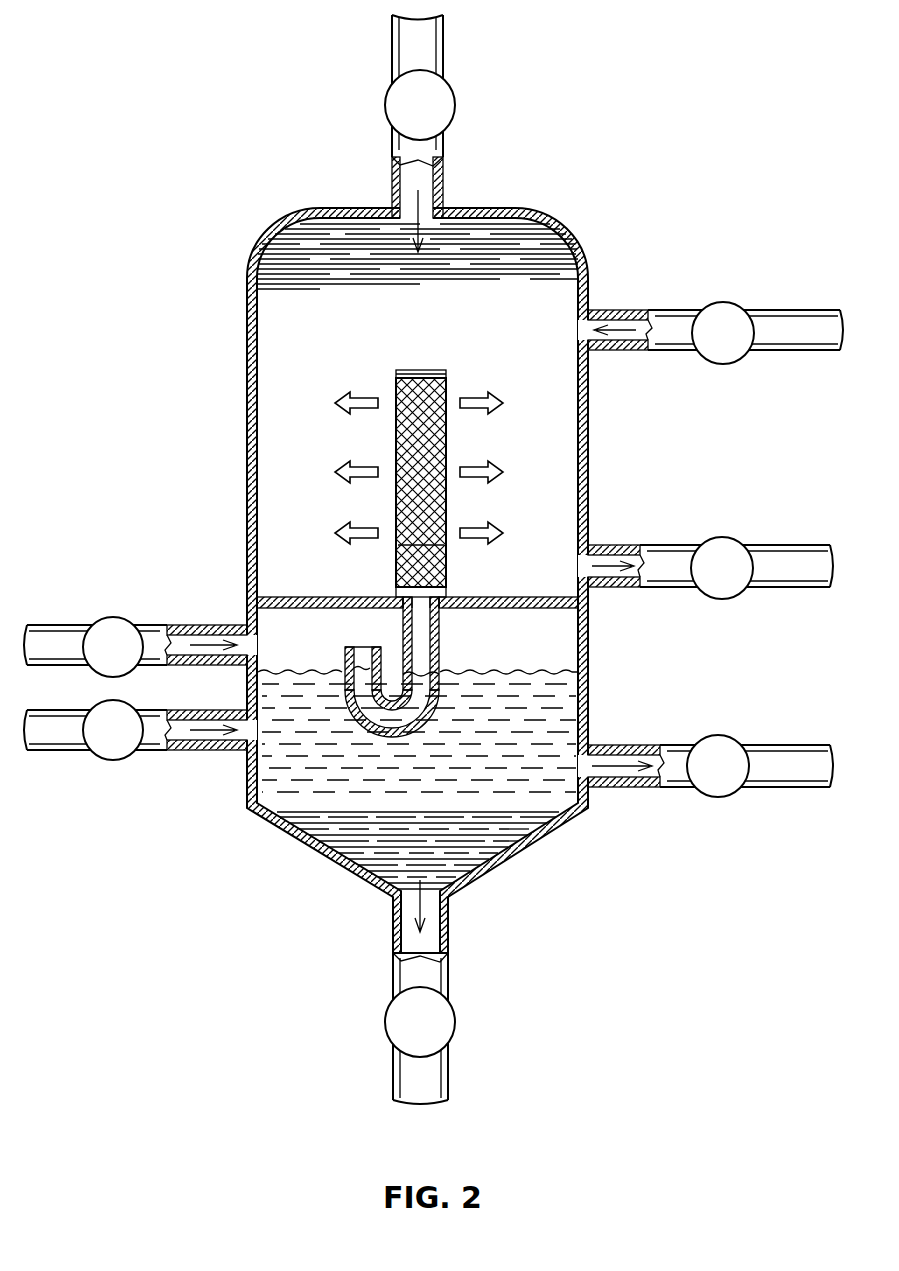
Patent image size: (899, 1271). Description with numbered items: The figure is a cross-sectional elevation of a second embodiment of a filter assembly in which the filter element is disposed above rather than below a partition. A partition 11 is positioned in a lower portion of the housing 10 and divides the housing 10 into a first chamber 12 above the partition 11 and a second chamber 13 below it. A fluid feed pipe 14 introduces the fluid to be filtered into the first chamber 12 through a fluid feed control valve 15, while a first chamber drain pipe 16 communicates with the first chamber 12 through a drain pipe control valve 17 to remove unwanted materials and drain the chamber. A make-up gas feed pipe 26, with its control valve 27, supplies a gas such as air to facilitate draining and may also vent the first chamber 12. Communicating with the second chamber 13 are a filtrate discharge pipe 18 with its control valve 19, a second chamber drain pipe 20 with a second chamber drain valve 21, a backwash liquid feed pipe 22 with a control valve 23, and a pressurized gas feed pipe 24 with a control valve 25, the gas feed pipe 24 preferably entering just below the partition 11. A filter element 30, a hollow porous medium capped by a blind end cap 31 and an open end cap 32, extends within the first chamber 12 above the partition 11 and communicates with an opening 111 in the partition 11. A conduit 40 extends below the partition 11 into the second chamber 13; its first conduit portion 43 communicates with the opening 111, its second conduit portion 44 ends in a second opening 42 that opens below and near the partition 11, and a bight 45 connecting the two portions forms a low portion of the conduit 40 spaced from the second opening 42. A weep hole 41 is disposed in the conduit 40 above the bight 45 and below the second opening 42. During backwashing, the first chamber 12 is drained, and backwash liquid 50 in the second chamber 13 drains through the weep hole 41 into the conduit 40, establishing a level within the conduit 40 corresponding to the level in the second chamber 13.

The housing 10 is at (247, 495).
The partition 11 is at (548, 602).
The first chamber 12 is at (273, 408).
The second chamber 13 is at (565, 633).
The fluid feed pipe 14 is at (427, 43).
The fluid feed control valve 15 is at (447, 108).
The first chamber drain pipe 16 is at (615, 545).
The drain pipe control valve 17 is at (730, 596).
The filtrate discharge pipe 18 is at (650, 745).
The control valve 19 is at (720, 795).
The second chamber drain pipe 20 is at (448, 1075).
The second chamber drain valve 21 is at (455, 1012).
The backwash liquid feed pipe 22 is at (205, 750).
The control valve 23 is at (105, 760).
The pressurized gas feed pipe 24 is at (210, 622).
The control valve 25 is at (113, 615).
The make-up gas feed pipe 26 is at (615, 350).
The control valve 27 is at (720, 302).
The filter element 30 is at (395, 500).
The blind end cap 31 is at (422, 370).
The open end cap 32 is at (436, 597).
The conduit 40 is at (397, 726).
The weep hole 41 is at (337, 690).
The second opening 42 is at (360, 650).
The first conduit portion 43 is at (440, 640).
The second conduit portion 44 is at (280, 690).
The bight 45 is at (385, 738).
The backwash liquid 50 is at (575, 668).
The opening 111 is at (397, 553).